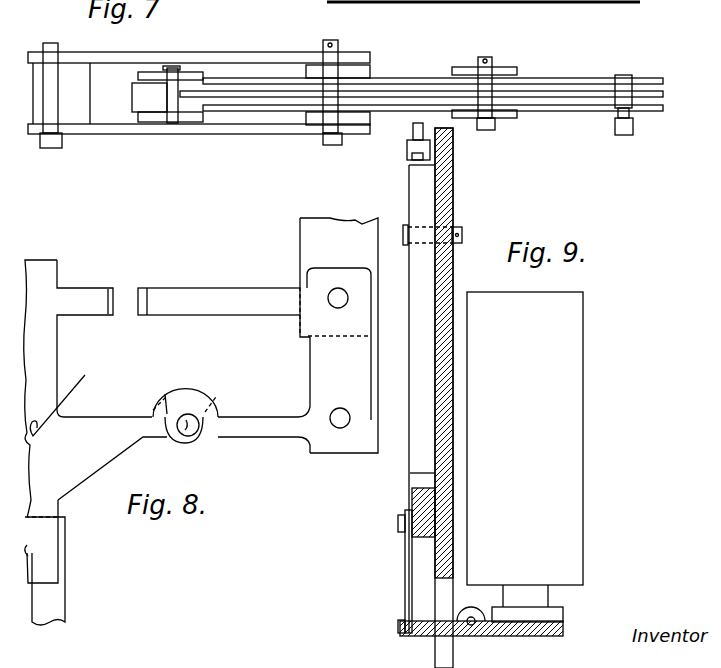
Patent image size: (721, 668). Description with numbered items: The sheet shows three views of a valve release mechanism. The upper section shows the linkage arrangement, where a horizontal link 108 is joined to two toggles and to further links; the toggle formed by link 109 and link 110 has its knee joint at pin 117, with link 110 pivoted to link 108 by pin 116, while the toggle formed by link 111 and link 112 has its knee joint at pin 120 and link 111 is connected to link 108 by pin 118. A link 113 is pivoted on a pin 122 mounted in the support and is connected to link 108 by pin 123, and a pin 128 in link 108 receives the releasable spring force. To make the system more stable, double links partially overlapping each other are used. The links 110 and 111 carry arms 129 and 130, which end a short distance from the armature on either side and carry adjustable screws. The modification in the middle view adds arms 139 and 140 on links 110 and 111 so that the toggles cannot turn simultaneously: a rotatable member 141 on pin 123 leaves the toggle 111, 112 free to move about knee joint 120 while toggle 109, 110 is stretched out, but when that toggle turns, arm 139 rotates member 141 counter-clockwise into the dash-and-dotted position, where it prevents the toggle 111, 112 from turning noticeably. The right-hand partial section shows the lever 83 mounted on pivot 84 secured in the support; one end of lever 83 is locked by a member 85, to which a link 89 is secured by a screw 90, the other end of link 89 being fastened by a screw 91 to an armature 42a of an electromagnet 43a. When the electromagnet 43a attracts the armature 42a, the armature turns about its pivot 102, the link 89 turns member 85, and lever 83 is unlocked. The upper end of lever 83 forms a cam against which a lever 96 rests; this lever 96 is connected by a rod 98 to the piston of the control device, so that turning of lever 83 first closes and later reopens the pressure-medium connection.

In FIG. 7, the pin 122 is at (48, 148).
In FIG. 7, the link 113 is at (107, 128).
In FIG. 7, the pin 118 is at (171, 113).
In FIG. 8, the pin 118 is at (98, 438).
In FIG. 7, the horizontal link 108 is at (236, 88).
In FIG. 7, the link 111 is at (198, 120).
In FIG. 8, the link 111 is at (43, 347).
In FIG. 7, the pin 123 is at (331, 145).
In FIG. 8, the pin 123 is at (205, 440).
In FIG. 7, the link 110 is at (507, 112).
In FIG. 8, the link 110 is at (328, 355).
In FIG. 7, the pin 116 is at (486, 130).
In FIG. 8, the pin 116 is at (340, 418).
In FIG. 7, the pin 128 is at (618, 128).
In FIG. 8, the arm 130 is at (90, 297).
In FIG. 8, the rotatable member 141 is at (182, 402).
In FIG. 8, the arm 140 is at (117, 430).
In FIG. 8, the arm 139 is at (283, 426).
In FIG. 8, the link 109 is at (313, 240).
In FIG. 8, the pin 117 is at (338, 298).
In FIG. 8, the arm 129 is at (190, 300).
In FIG. 8, the pin 120 is at (58, 551).
In FIG. 8, the link 112 is at (60, 597).
In FIG. 9, the lever 83 is at (418, 197).
In FIG. 9, the lever 96 is at (407, 150).
In FIG. 9, the rod 98 is at (424, 134).
In FIG. 9, the pivot 84 is at (462, 232).
In FIG. 9, the member 85 is at (418, 500).
In FIG. 9, the link 89 is at (410, 565).
In FIG. 9, the screw 90 is at (398, 523).
In FIG. 9, the screw 91 is at (400, 625).
In FIG. 9, the electromagnet 43a is at (543, 575).
In FIG. 9, the armature 42a is at (418, 636).
In FIG. 9, the pivot 102 is at (478, 636).